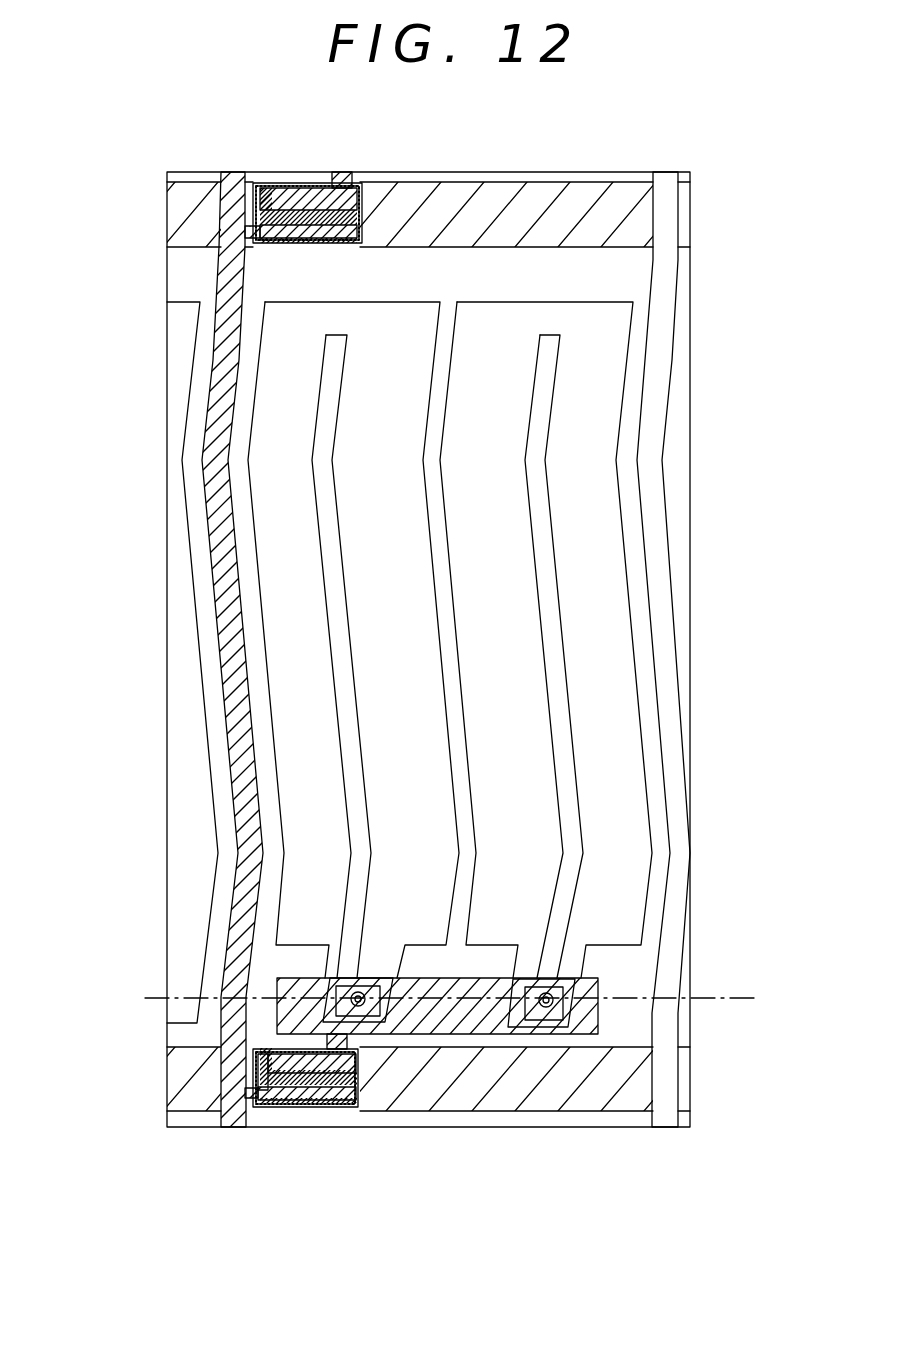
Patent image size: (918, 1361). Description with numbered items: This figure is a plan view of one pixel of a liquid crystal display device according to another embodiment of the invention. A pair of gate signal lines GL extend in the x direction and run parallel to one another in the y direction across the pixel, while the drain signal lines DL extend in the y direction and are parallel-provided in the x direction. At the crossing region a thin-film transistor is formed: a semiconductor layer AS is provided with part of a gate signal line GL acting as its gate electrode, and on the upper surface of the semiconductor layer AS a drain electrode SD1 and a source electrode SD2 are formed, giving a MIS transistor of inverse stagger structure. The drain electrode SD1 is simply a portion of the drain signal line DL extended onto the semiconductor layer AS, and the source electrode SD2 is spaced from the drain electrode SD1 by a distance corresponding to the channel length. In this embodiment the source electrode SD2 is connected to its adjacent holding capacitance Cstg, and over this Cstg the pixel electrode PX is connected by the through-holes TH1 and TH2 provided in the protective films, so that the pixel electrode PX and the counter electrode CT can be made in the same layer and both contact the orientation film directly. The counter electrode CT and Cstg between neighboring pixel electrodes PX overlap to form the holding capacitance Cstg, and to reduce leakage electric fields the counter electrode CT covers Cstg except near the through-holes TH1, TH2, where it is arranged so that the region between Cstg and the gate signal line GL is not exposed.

The gate signal line GL is at (690, 222).
The drain signal line DL is at (233, 1122).
The counter electrode CT is at (438, 397).
The pixel electrode PX is at (345, 686).
The holding capacitance Cstg is at (455, 1025).
The through-hole TH1 is at (362, 992).
The through-hole TH2 is at (547, 993).
The semiconductor layer AS is at (280, 1106).
The drain electrode SD1 is at (318, 1098).
The source electrode SD2 is at (272, 1060).